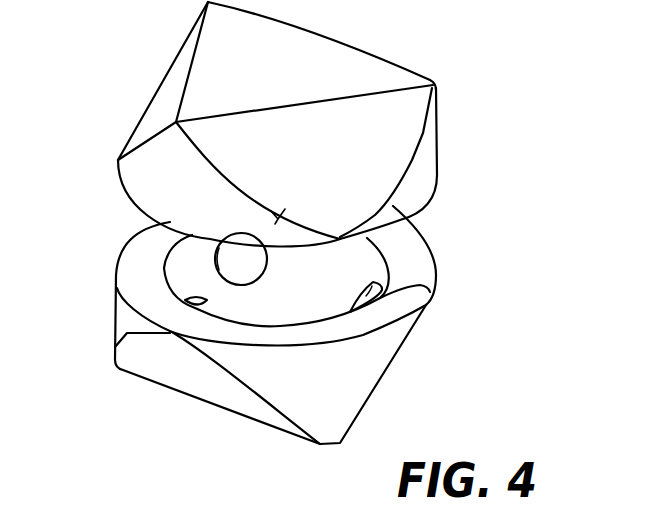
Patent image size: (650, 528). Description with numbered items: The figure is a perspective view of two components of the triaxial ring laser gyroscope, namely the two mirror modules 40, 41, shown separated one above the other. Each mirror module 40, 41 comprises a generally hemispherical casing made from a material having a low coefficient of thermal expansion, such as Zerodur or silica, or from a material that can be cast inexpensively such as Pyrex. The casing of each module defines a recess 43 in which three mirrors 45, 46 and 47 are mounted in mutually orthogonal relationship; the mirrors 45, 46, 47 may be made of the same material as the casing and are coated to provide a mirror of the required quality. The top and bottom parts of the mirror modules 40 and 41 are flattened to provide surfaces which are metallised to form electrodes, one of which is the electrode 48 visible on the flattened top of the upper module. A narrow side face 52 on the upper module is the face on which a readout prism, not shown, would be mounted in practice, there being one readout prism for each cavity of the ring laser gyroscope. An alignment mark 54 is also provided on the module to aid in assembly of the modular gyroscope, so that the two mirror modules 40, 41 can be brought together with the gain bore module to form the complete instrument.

The mirror module 40 is at (138, 74).
The mirror module 41 is at (133, 386).
The recess 43 is at (186, 284).
The mirror 45 is at (258, 272).
The mirror 46 is at (188, 300).
The mirror 47 is at (430, 292).
The electrode 48 is at (290, 79).
The face 52 is at (147, 113).
The alignment mark 54 is at (417, 212).